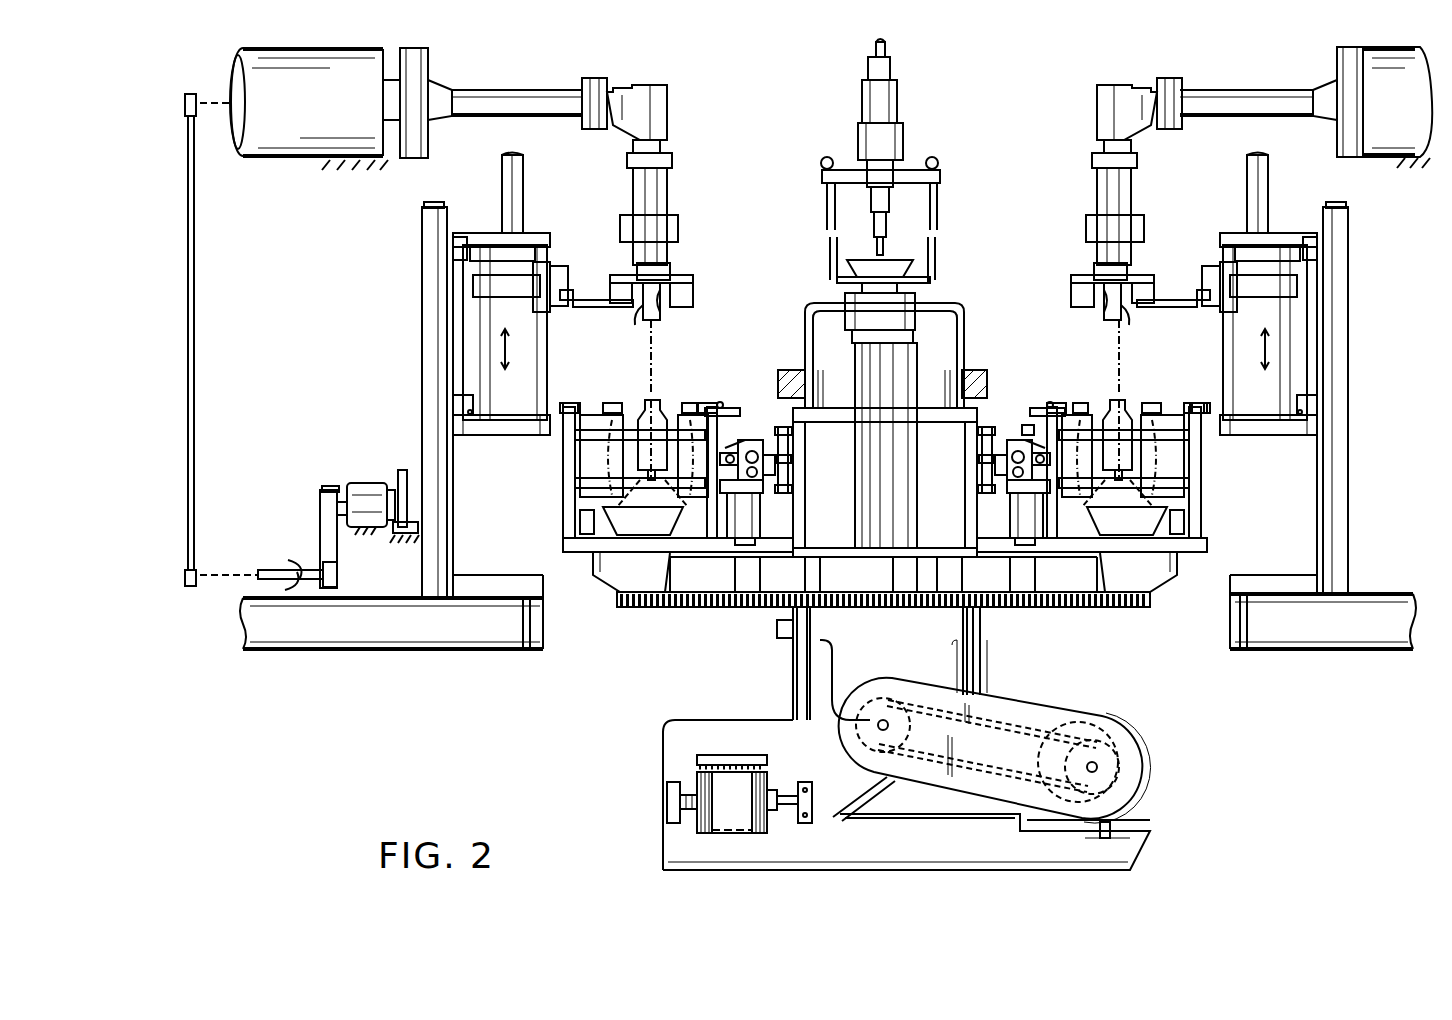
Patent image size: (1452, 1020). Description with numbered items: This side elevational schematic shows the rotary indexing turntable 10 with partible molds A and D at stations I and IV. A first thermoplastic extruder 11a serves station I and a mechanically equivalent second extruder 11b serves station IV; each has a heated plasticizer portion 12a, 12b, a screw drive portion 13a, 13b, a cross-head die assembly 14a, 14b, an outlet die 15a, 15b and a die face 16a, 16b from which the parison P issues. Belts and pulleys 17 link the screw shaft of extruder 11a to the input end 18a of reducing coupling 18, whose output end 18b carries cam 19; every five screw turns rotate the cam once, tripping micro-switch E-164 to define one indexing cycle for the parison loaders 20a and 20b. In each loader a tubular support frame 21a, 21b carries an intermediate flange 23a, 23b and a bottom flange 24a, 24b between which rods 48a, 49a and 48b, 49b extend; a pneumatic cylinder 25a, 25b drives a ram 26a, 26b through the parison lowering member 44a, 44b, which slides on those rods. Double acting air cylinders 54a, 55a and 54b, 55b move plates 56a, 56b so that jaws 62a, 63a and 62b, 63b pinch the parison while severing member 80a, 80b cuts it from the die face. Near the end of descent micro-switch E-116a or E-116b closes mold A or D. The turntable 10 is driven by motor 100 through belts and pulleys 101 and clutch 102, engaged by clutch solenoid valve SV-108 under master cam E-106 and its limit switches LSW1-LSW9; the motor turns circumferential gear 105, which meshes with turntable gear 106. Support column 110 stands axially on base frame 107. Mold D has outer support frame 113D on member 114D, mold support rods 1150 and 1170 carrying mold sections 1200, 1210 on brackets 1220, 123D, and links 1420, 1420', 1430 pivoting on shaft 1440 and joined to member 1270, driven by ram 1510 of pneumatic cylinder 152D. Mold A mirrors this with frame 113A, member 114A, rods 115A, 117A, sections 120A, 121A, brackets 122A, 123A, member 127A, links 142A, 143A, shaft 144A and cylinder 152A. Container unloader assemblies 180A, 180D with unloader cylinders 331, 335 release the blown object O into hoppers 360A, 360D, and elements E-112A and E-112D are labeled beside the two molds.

The rotary indexing turntable 10 is at (648, 632).
The first thermoplastic extruder 11a is at (448, 173).
The second thermoplastic extruder 11b is at (1305, 135).
The heated thermoplastic material plasticizer portion 12a is at (292, 140).
The heated thermoplastic material plasticizer portion 12b is at (1408, 165).
The extruder screw drive portion 13a is at (445, 80).
The extruder screw drive portion 13b is at (1332, 82).
The cross-head die assembly 14a is at (644, 90).
The cross-head die assembly 14b is at (1112, 89).
The outlet die 15a is at (675, 272).
The outlet die 15b is at (1100, 272).
The die face 16a is at (643, 305).
The die face 16b is at (1127, 306).
The belts and pulleys 17 is at (293, 562).
The reducing coupling 18 is at (360, 483).
The input end of reducing coupling 18a is at (344, 490).
The output end of reducing coupling 18b is at (402, 472).
The cam 19 is at (395, 535).
The parison loader 20a is at (404, 371).
The parison loader 20b is at (1370, 357).
The tubular support frame 21a is at (421, 262).
The tubular support frame 21b is at (1352, 268).
The cantilevered intermediate flange member 23a is at (545, 233).
The cantilevered intermediate flange member 23b is at (1224, 233).
The cantilevered bottom flange member 24a is at (465, 435).
The cantilevered bottom flange member 24b is at (1288, 435).
The pneumatic cylinder 25a is at (523, 182).
The pneumatic cylinder 25b is at (1250, 177).
The retractably extensible ram 26a is at (533, 255).
The retractably extensible ram 26b is at (1223, 258).
The parison lowering member 44a is at (473, 285).
The parison lowering member 44b is at (1300, 288).
The spaced rod 48a is at (482, 370).
The spaced rod 48b is at (1290, 385).
The spaced rod 49a is at (571, 369).
The spaced rod 49b is at (1233, 345).
The double acting air cylinder 54a is at (606, 290).
The double acting air cylinder 54b is at (1165, 290).
The double acting air cylinder 55a is at (612, 300).
The double acting air cylinder 55b is at (1150, 300).
The plate 56a is at (694, 293).
The plate 56b is at (1077, 293).
The jaw 62a is at (688, 306).
The jaw 62b is at (1080, 306).
The jaw 63a is at (578, 305).
The jaw 63b is at (1175, 315).
The parison severing member 80a is at (664, 300).
The parison severing member 80b is at (1106, 300).
The drive motor 100 is at (1140, 733).
The belts and pulleys 101 is at (1013, 693).
The clutch 102 is at (812, 790).
The circumferential gear 105 is at (910, 617).
The circumferential gear of turntable 106 is at (1110, 607).
The base frame 107 is at (738, 567).
The cylindrical support column 110 is at (900, 150).
The outer support frame 113A is at (575, 450).
The outer support frame 113D is at (1195, 452).
The member 114A is at (563, 545).
The member 114D is at (1207, 545).
The mold support rod 115A is at (742, 440).
The mold support rod 1150 is at (995, 425).
The mold support rod 117A is at (758, 500).
The mold support rod 1170 is at (1020, 510).
The mold section 120A is at (670, 518).
The mold section 1200 is at (1080, 545).
The mold section 121A is at (600, 480).
The mold section 1210 is at (1170, 480).
The bracket 122A is at (745, 512).
The bracket 1220 is at (1062, 540).
The bracket 123A is at (590, 462).
The bracket 123D is at (1180, 465).
The member 127A is at (775, 486).
The member 1270 is at (995, 458).
The linkage 142A is at (783, 437).
The linkage 1420 is at (956, 476).
The linkage 1420' is at (1031, 401).
The linkage 143A is at (735, 440).
The linkage 1430 is at (1039, 448).
The shaft 144A is at (763, 458).
The shaft 1440 is at (1005, 474).
The retractably extensible ram 1510 is at (1068, 478).
The pneumatic cylinder 152A is at (742, 530).
The pneumatic cylinder 152D is at (1028, 525).
The container unloader assembly 180A is at (638, 389).
The container unloader assembly 180D is at (1168, 376).
The unloader cylinder 331 is at (720, 403).
The unloader cylinder 335 is at (563, 405).
The hopper 360A is at (637, 587).
The hopper 360D is at (1143, 585).
The master cam E-106 is at (690, 775).
The solenoid E-112A is at (585, 515).
The solenoid E-112D is at (1185, 515).
The micro-switch E-116a is at (453, 405).
The micro-switch E-116b is at (1318, 405).
The micro-switch E-164 is at (340, 578).
The clutch solenoid valve SV-108 is at (805, 823).
The limit switches LSW1-LSW9 is at (686, 765).
The mold A is at (596, 394).
The mold D is at (1189, 389).
The station I is at (590, 381).
The station IV is at (1203, 343).
The blown object O is at (660, 418).
The parison P is at (660, 352).